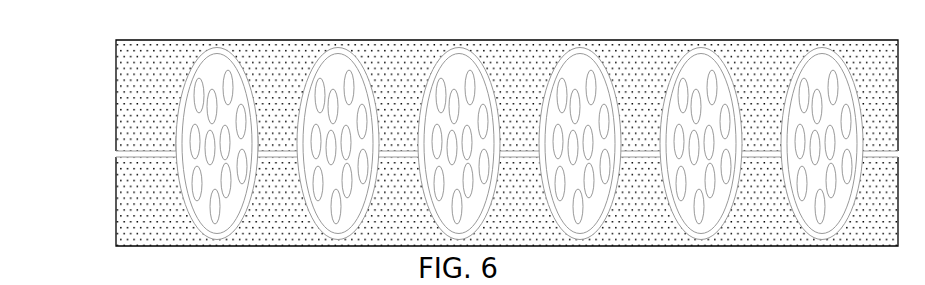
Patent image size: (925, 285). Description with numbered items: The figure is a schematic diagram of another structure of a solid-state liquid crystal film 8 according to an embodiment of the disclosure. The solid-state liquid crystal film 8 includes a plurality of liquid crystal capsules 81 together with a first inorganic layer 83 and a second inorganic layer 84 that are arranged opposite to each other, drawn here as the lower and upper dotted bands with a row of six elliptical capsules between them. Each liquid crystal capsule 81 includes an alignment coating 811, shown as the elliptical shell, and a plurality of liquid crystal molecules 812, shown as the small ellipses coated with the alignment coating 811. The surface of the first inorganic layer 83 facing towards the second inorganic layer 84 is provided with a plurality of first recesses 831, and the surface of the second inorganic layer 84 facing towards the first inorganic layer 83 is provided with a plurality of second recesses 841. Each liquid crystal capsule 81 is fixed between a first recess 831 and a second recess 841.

The solid-state liquid crystal film 8 is at (462, 127).
The liquid crystal capsule 81 is at (463, 124).
The alignment coating 811 is at (308, 73).
The liquid crystal molecules 812 is at (345, 72).
The first inorganic layer 83 is at (479, 191).
The first recess 831 is at (197, 220).
The second inorganic layer 84 is at (479, 95).
The second recess 841 is at (183, 83).